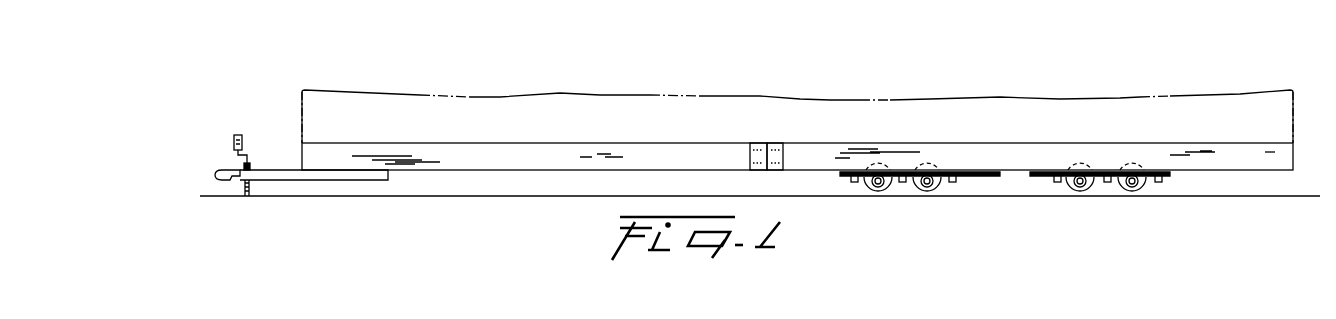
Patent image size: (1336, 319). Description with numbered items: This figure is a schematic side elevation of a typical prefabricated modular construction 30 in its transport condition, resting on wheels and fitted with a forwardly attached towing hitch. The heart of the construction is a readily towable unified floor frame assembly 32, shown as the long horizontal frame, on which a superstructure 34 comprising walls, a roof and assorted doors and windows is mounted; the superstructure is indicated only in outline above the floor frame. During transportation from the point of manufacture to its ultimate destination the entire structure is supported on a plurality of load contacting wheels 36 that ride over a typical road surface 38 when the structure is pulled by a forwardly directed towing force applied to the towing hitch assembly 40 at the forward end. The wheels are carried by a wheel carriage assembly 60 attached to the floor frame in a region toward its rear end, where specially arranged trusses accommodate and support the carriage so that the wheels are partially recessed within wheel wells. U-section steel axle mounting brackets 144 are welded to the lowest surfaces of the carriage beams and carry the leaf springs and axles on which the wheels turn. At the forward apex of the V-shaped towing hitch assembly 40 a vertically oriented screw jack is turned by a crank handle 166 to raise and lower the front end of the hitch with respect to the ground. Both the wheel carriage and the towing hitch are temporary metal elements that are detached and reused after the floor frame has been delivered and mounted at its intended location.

The prefabricated modular construction 30 is at (710, 82).
The unified floor frame assembly 32 is at (490, 143).
The superstructure 34 is at (868, 100).
The load contacting wheels 36 is at (876, 193).
The road surface 38 is at (495, 197).
The towing hitch assembly 40 is at (282, 170).
The wheel carriage assembly 60 is at (1040, 176).
The axle mounting brackets 144 is at (956, 180).
The crank handle 166 is at (232, 150).